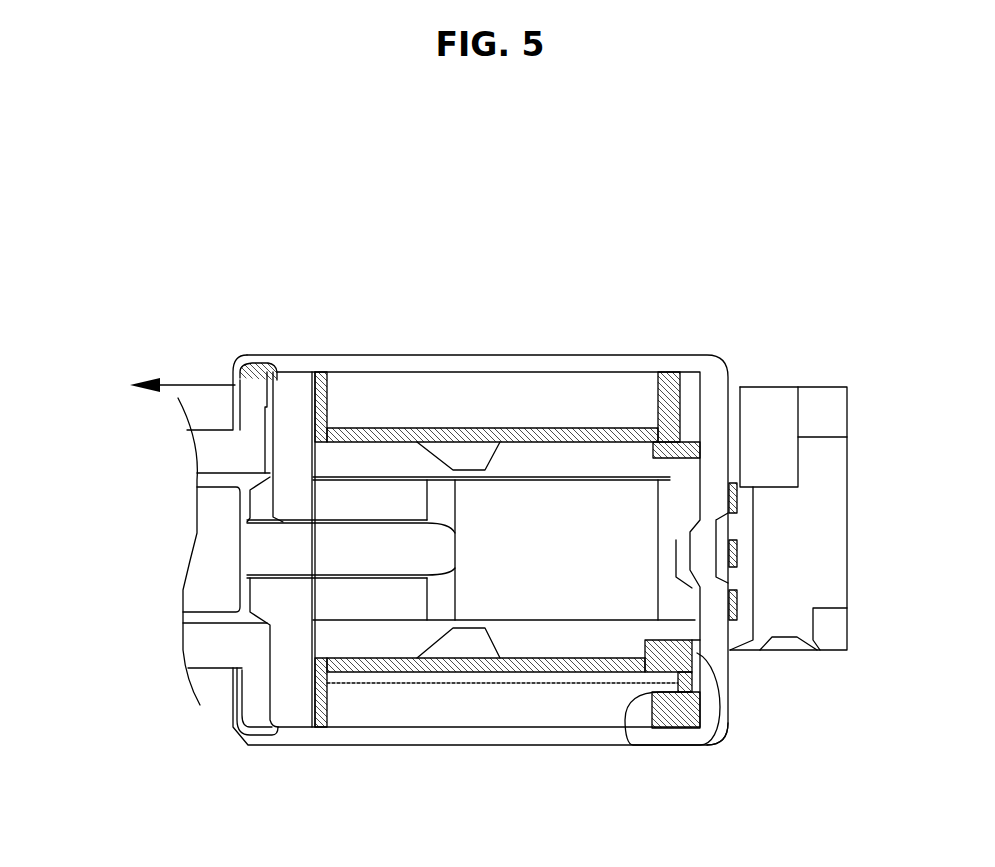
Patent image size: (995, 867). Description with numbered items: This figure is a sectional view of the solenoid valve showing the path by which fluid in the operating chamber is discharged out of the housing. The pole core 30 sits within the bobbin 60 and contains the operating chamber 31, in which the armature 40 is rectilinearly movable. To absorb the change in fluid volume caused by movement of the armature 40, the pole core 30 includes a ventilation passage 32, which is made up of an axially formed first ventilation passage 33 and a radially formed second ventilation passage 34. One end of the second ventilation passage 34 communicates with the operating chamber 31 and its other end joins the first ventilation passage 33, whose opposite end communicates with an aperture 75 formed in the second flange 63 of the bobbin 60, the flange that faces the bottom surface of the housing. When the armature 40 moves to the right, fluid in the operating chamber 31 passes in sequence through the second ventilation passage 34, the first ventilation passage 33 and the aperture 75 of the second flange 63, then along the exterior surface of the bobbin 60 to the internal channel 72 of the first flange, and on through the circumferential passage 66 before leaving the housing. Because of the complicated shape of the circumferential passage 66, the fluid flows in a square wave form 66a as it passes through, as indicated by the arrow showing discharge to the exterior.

The pole core 30 is at (673, 467).
The operating chamber 31 is at (688, 503).
The ventilation passage 32 is at (777, 778).
The first ventilation passage 33 is at (712, 745).
The second ventilation passage 34 is at (720, 737).
The armature 40 is at (558, 553).
The bobbin 60 is at (565, 426).
The second flange 63 is at (655, 715).
The circumferential passage 66 is at (312, 395).
The square wave form 66a is at (313, 545).
The internal channel 72 is at (315, 697).
The aperture 75 is at (625, 718).